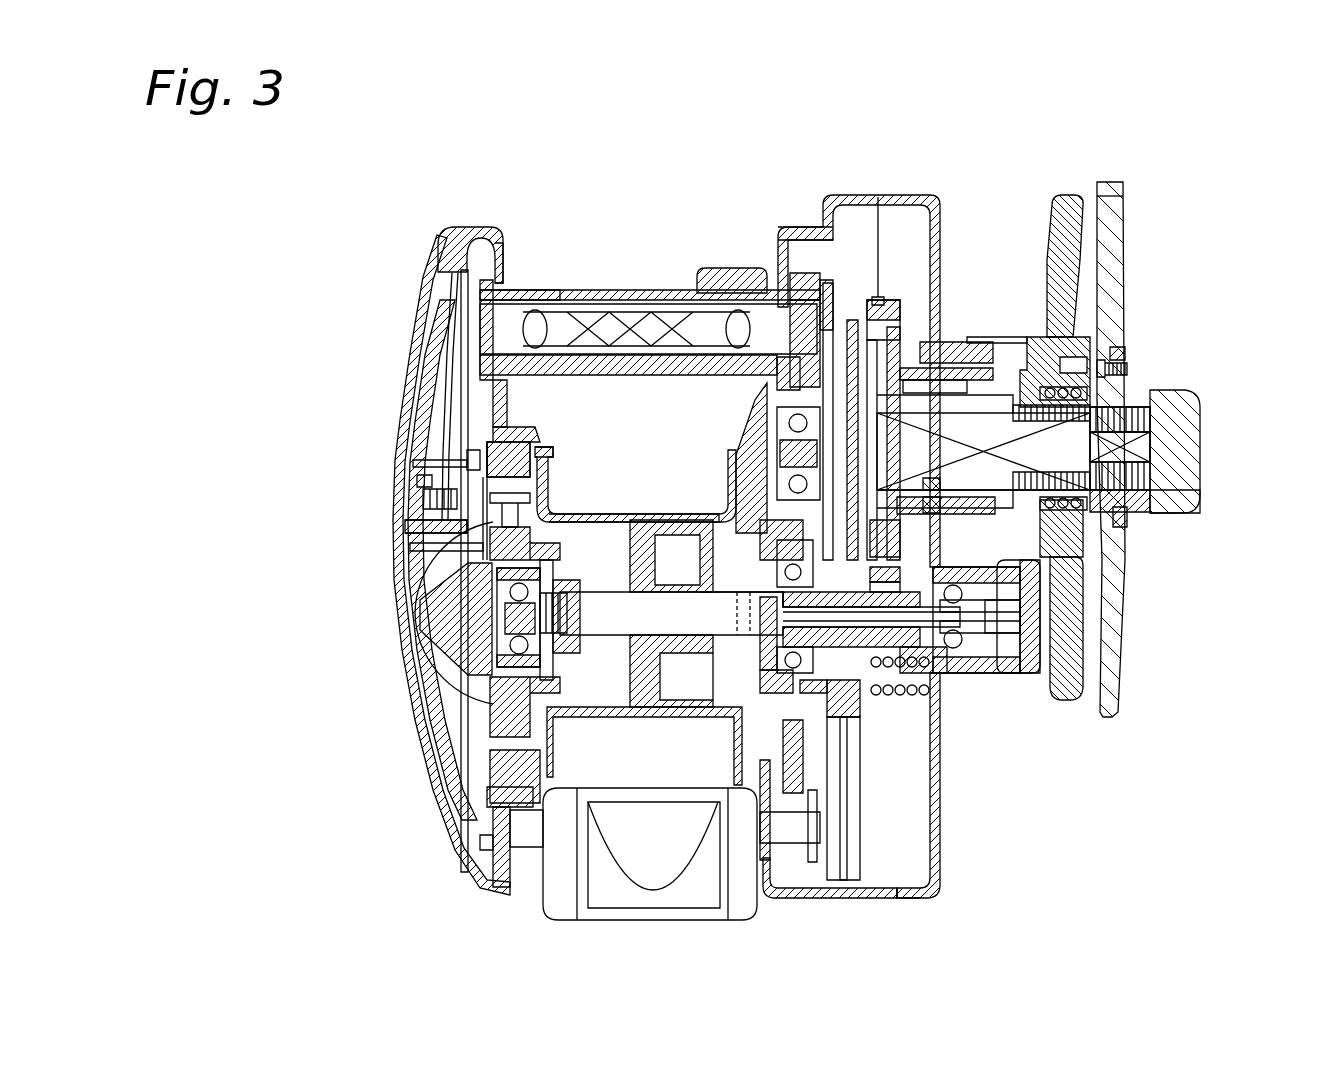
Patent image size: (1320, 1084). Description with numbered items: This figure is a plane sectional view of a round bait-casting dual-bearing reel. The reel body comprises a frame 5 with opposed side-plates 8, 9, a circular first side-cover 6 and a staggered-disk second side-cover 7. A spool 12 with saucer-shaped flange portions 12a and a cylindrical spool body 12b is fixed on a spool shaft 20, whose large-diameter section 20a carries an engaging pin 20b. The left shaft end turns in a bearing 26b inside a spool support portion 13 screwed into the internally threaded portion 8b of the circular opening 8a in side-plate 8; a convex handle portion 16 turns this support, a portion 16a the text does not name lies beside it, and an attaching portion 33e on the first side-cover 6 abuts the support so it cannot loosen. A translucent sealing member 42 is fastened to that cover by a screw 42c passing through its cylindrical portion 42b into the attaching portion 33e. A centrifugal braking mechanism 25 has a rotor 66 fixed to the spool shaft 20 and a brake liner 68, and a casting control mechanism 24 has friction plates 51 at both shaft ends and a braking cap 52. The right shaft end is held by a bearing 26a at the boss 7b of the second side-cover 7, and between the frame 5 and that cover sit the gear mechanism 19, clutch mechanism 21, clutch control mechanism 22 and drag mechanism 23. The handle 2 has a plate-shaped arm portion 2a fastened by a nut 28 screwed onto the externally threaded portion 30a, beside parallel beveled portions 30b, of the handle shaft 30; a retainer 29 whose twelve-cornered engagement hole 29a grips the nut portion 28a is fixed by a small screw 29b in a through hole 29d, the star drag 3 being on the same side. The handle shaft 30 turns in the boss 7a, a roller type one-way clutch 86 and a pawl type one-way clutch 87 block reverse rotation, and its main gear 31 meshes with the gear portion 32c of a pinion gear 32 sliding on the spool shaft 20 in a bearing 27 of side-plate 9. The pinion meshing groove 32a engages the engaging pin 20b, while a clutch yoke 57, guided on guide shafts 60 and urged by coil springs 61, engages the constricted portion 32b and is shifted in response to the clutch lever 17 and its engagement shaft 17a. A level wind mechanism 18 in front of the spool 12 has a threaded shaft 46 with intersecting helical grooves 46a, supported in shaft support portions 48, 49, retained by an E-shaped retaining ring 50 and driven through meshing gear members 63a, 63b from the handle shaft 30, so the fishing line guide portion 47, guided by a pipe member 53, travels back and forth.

The handle 2 is at (1183, 273).
The arm portion 2a is at (1123, 227).
The star drag 3 is at (1070, 197).
The frame 5 is at (520, 245).
The first side-cover 6 is at (433, 373).
The second side-cover 7 is at (940, 223).
The boss 7a is at (943, 347).
The boss 7b is at (940, 673).
The side-plate 8 is at (527, 390).
The circular opening 8a is at (547, 447).
The internally threaded portion 8b is at (483, 447).
The side-plate 9 is at (805, 227).
The spool 12 is at (650, 493).
The flange portions 12a is at (540, 477).
The spool body 12b is at (613, 495).
The spool support portion 13 is at (440, 612).
The convex handle portion 16 is at (423, 623).
The rotor rim 16a is at (453, 463).
The clutch lever 17 is at (643, 903).
The engagement shaft 17a is at (797, 843).
The level wind mechanism 18 is at (591, 290).
The gear mechanism 19 is at (903, 300).
The spool shaft 20 is at (677, 600).
The large-diameter section 20a is at (703, 603).
The engaging pin 20b is at (740, 660).
The clutch mechanism 21 is at (720, 717).
The clutch control mechanism 22 is at (830, 760).
The drag mechanism 23 is at (873, 300).
The casting control mechanism 24 is at (1027, 690).
The centrifugal braking mechanism 25 is at (460, 552).
The bearing 26a is at (960, 683).
The bearing 26b is at (487, 690).
The bearing 27 is at (813, 566).
The nut 28 is at (1177, 457).
The nut portion 28a is at (1130, 515).
The retainer 29 is at (1127, 518).
The engagement hole 29a is at (1187, 490).
The small screw 29b is at (1127, 358).
The through hole 29d is at (1127, 363).
The handle shaft 30 is at (1027, 337).
The externally threaded portion 30a is at (1120, 413).
The parallel beveled portions 30b is at (1147, 443).
The main gear 31 is at (890, 297).
The pinion gear 32 is at (880, 700).
The meshing groove 32a is at (783, 760).
The constricted portion 32b is at (755, 800).
The gear portion 32c is at (930, 505).
The attaching portion 33e is at (420, 482).
The sealing member 42 is at (417, 527).
The cylindrical portion 42b is at (400, 540).
The screw 42c is at (420, 497).
The threaded shaft 46 is at (653, 317).
The helical grooves 46a is at (607, 310).
The fishing line guide portion 47 is at (720, 270).
The shaft support portion 48 is at (472, 230).
The shaft support portion 49 is at (790, 273).
The E-shaped retaining ring 50 is at (452, 305).
The friction plates 51 is at (497, 637).
The braking cap 52 is at (1013, 660).
The pipe member 53 is at (557, 290).
The clutch yoke 57 is at (843, 800).
The guide shafts 60 is at (905, 880).
The coil springs 61 is at (912, 700).
The gear member 63a is at (832, 280).
The gear member 63b is at (852, 320).
The rotor 66 is at (547, 553).
The brake liner 68 is at (467, 457).
The roller type one-way clutch 86 is at (912, 500).
The pawl type one-way clutch 87 is at (920, 870).